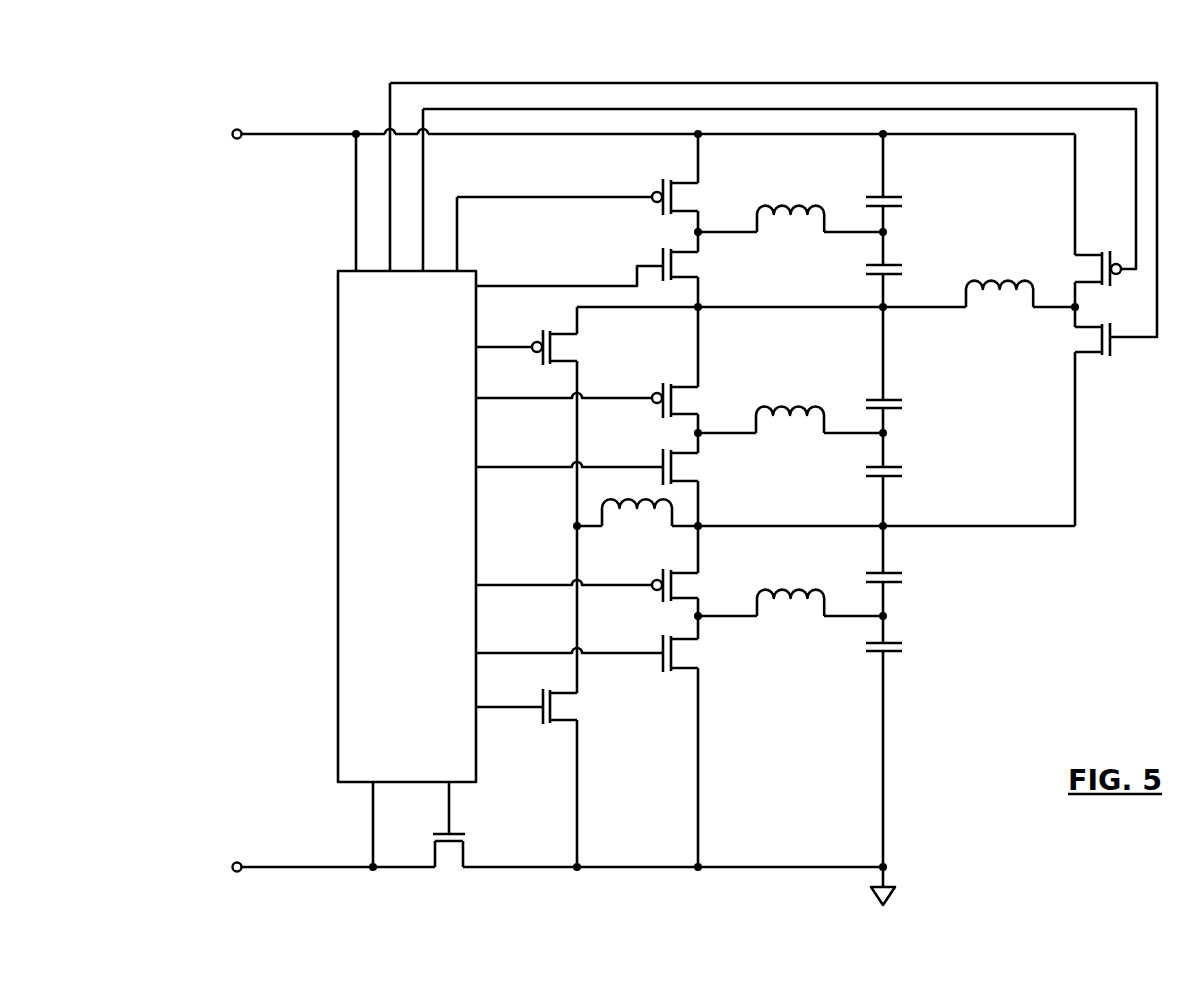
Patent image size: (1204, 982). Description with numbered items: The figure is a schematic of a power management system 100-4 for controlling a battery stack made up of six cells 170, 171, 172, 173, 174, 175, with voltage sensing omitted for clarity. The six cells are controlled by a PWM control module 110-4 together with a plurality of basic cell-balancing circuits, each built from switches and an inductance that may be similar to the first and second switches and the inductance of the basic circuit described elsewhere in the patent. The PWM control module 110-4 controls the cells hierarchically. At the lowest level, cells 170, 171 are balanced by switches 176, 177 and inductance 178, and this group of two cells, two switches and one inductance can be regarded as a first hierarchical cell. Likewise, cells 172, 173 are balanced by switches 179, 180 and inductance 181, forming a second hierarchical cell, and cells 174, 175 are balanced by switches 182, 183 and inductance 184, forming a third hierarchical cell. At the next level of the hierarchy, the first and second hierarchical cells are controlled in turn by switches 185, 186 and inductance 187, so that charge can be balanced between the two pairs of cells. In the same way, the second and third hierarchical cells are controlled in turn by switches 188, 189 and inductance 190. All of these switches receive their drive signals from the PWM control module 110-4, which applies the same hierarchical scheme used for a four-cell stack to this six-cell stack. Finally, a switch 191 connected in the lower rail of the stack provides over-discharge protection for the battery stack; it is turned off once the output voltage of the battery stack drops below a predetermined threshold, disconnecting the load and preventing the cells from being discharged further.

The power management system 100-4 is at (182, 64).
The PWM control module 110-4 is at (338, 527).
The cell 170 is at (898, 194).
The cell 171 is at (898, 262).
The cell 172 is at (898, 396).
The cell 173 is at (898, 465).
The cell 174 is at (898, 569).
The cell 175 is at (896, 639).
The switch 176 is at (701, 178).
The switch 177 is at (701, 290).
The inductance 178 is at (786, 205).
The switch 179 is at (702, 375).
The switch 180 is at (702, 495).
The inductance 181 is at (787, 407).
The switch 182 is at (702, 563).
The switch 183 is at (702, 681).
The inductance 184 is at (787, 590).
The switch 185 is at (1073, 244).
The switch 186 is at (1073, 364).
The inductance 187 is at (986, 280).
The switch 188 is at (581, 373).
The switch 189 is at (581, 733).
The inductance 190 is at (613, 507).
The switch 191 is at (465, 853).